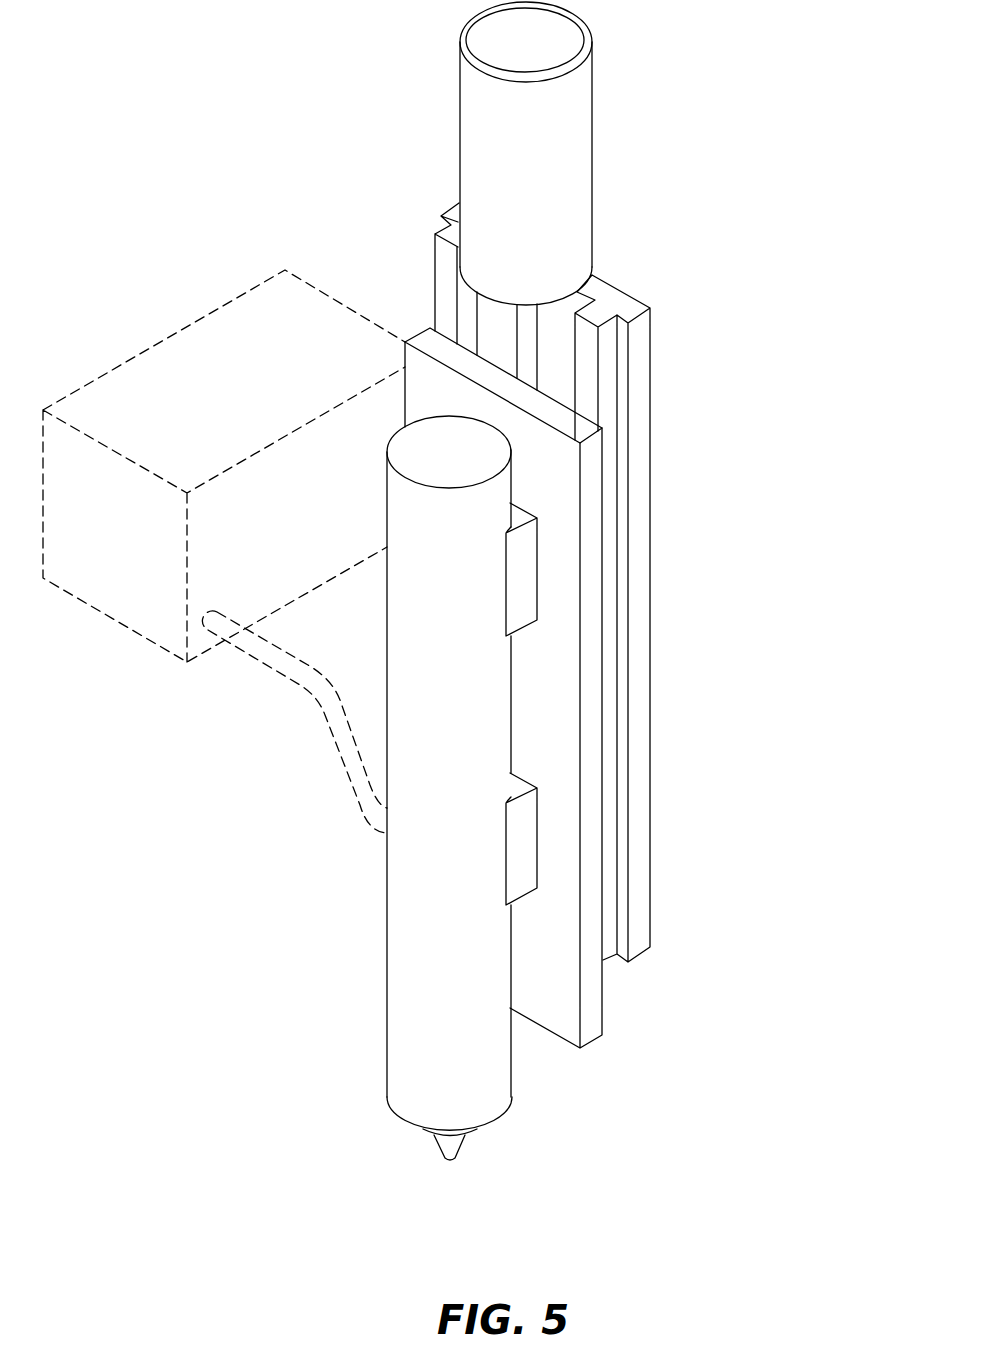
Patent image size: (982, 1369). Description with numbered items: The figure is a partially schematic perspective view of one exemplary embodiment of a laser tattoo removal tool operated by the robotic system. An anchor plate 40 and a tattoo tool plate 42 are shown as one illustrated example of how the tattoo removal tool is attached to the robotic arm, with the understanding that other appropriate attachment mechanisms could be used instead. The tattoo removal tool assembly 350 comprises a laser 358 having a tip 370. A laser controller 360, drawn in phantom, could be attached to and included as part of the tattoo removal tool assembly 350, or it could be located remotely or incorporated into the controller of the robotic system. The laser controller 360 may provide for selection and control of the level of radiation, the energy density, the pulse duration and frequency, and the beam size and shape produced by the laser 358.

The anchor plate 40 is at (652, 525).
The tattoo tool plate 42 is at (605, 1013).
The tattoo removal tool assembly 350 is at (383, 808).
The laser 358 is at (410, 990).
The laser controller 360 is at (200, 380).
The tip 370 is at (463, 1152).